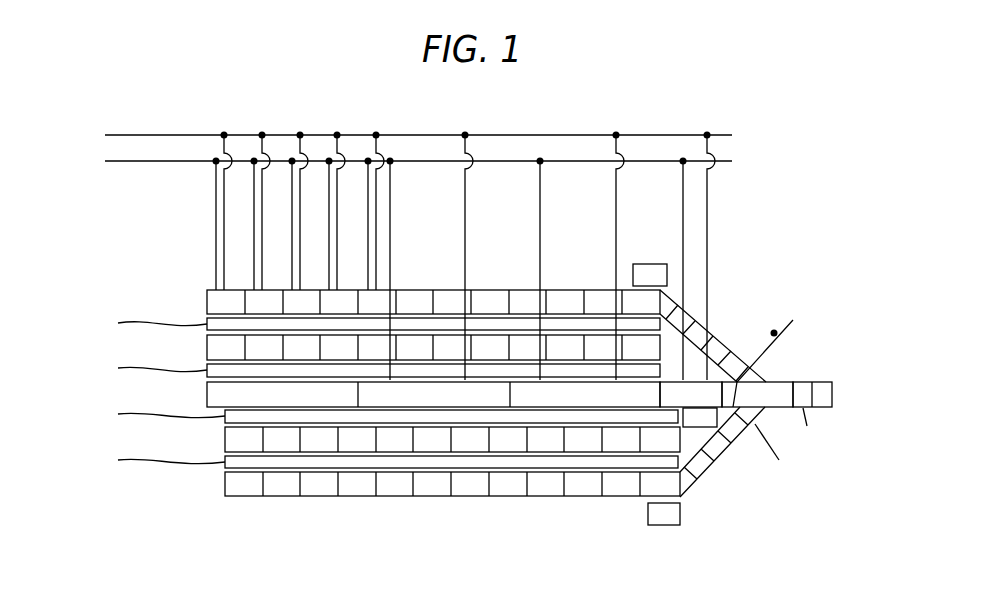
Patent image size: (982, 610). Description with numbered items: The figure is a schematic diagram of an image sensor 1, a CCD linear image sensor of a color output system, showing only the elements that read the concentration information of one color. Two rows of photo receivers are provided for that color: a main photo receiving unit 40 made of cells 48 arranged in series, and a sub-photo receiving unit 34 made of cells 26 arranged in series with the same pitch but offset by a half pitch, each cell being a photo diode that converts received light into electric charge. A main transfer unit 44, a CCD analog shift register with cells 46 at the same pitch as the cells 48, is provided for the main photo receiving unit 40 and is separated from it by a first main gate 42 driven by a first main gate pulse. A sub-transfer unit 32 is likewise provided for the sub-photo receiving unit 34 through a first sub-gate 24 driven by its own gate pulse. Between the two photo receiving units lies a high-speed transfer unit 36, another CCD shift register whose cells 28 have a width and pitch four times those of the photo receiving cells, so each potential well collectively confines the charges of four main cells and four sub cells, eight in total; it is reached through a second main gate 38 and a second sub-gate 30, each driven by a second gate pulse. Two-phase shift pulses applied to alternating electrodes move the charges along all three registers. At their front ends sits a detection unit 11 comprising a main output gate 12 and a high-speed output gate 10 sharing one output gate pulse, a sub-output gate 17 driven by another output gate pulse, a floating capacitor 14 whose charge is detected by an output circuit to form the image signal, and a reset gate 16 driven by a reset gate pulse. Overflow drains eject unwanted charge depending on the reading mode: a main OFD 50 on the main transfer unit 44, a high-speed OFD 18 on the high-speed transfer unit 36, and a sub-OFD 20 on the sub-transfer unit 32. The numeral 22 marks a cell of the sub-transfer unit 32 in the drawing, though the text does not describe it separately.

The image sensor 1 is at (768, 216).
The high-speed output gate 10 is at (725, 382).
The detection unit 11 is at (792, 417).
The main output gate 12 is at (765, 377).
The floating capacitor 14 is at (780, 384).
The reset gate 16 is at (806, 395).
The sub-output gate 17 is at (750, 426).
The high-speed OFD 18 is at (702, 428).
The sub-OFD 20 is at (666, 526).
The transfer electrode 22 is at (621, 491).
The first sub-gate 24 is at (547, 463).
The cells of the sub-photo receiving unit 26 is at (505, 444).
The cells of the high-speed transfer unit 28 is at (435, 399).
The second sub-gate 30 is at (360, 418).
The sub-transfer unit 32 is at (215, 481).
The sub-photo receiving unit 34 is at (215, 436).
The high-speed transfer unit 36 is at (197, 391).
The second main gate 38 is at (282, 373).
The main photo receiving unit 40 is at (197, 346).
The first main gate 42 is at (573, 324).
The main transfer unit 44 is at (197, 300).
The cells of the main transfer unit 46 is at (418, 296).
The cells of the main photo receiving unit 48 is at (493, 343).
The main OFD 50 is at (651, 264).